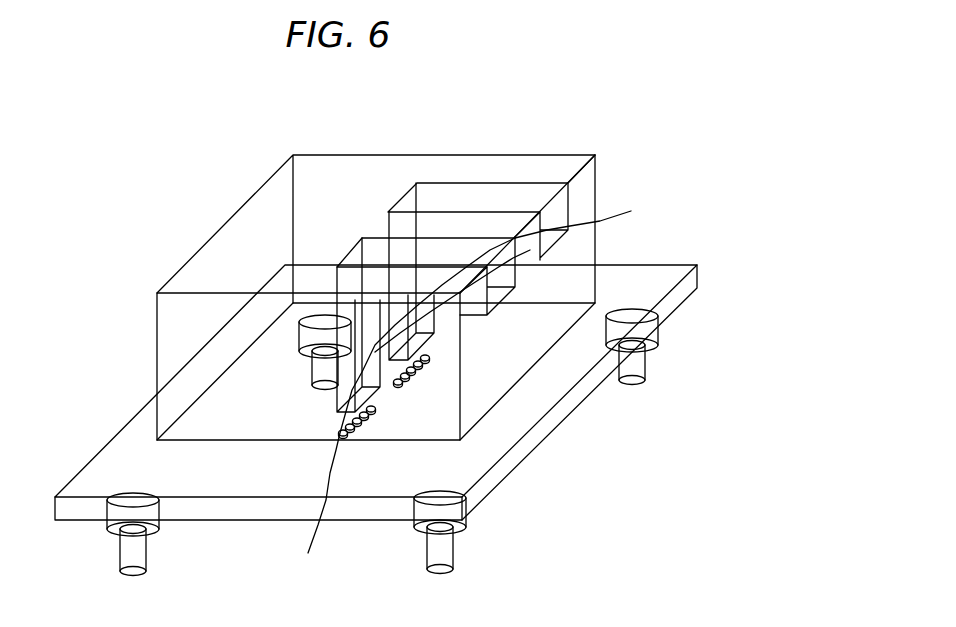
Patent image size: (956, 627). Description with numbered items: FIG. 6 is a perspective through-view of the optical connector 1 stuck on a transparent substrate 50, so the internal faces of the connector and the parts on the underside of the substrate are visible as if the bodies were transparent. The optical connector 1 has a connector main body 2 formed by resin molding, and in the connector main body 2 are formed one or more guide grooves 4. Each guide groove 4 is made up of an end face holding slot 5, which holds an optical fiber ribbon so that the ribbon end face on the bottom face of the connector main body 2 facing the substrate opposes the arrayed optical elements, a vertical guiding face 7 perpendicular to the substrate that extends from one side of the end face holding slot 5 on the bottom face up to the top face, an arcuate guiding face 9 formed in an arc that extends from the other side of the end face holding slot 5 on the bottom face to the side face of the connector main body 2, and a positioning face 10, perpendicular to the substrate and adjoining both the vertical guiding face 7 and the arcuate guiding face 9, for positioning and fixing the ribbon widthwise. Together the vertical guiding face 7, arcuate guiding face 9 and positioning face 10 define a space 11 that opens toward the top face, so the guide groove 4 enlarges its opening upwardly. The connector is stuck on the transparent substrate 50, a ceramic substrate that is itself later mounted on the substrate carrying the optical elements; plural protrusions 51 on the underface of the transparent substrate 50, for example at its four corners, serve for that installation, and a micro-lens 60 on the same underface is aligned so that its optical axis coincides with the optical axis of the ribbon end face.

The optical connector 1 is at (221, 229).
The connector main body 2 is at (165, 328).
The guide groove 4 is at (510, 198).
The end face holding slot 5 is at (343, 437).
The vertical guiding face 7 is at (408, 200).
The arcuate guiding face 9 is at (478, 373).
The positioning face 10 is at (553, 198).
The space 11 is at (437, 198).
The transparent substrate 50 is at (562, 408).
The protrusions 51 is at (454, 545).
The lens 60 is at (332, 412).